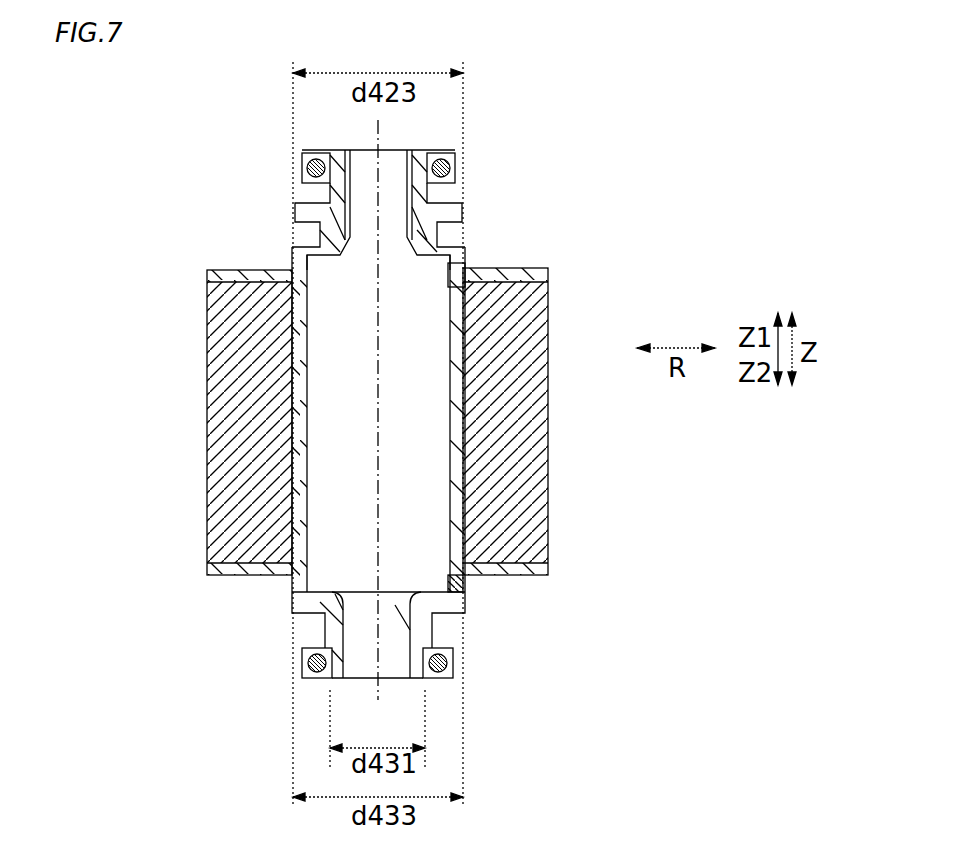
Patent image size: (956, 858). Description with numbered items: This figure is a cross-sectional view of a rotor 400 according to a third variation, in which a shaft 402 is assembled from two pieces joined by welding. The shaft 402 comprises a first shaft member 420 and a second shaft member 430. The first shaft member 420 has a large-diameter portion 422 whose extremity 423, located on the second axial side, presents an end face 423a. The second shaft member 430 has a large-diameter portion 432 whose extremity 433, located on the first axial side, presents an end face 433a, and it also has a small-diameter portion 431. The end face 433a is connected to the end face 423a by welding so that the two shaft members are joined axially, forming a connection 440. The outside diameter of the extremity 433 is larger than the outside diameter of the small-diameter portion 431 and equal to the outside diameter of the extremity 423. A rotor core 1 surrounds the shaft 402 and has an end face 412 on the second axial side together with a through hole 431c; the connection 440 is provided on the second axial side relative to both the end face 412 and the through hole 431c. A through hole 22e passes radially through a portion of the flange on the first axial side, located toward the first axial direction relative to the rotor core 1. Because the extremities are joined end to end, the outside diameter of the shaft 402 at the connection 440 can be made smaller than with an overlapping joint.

The rotor 400 is at (218, 173).
The shaft 402 is at (283, 255).
The first shaft member 420 is at (311, 363).
The large-diameter portion 422 is at (300, 453).
The extremity 423 is at (300, 572).
The end face 423a is at (297, 592).
The large-diameter portion 432 is at (320, 600).
The extremity 433 is at (305, 598).
The end face 433a is at (302, 575).
The small-diameter portion 431 is at (332, 684).
The second shaft member 430 is at (357, 690).
The through hole 431c is at (463, 584).
The connection 440 is at (470, 597).
The rotor core 1 is at (525, 403).
The end face 412 is at (527, 566).
The through hole 22e is at (470, 263).